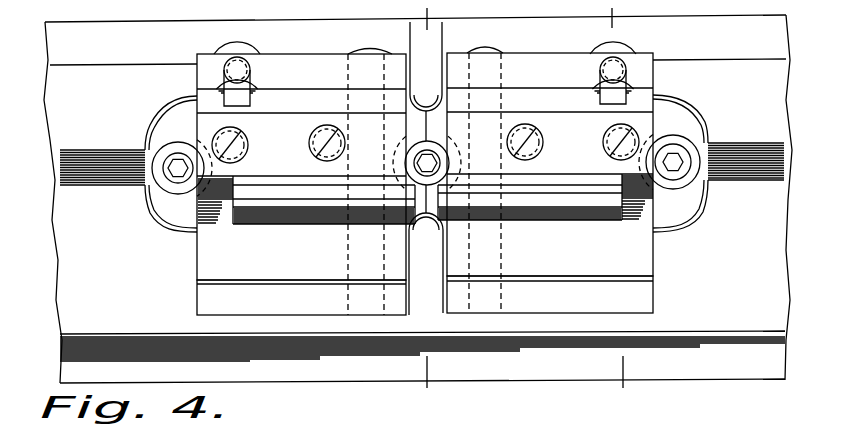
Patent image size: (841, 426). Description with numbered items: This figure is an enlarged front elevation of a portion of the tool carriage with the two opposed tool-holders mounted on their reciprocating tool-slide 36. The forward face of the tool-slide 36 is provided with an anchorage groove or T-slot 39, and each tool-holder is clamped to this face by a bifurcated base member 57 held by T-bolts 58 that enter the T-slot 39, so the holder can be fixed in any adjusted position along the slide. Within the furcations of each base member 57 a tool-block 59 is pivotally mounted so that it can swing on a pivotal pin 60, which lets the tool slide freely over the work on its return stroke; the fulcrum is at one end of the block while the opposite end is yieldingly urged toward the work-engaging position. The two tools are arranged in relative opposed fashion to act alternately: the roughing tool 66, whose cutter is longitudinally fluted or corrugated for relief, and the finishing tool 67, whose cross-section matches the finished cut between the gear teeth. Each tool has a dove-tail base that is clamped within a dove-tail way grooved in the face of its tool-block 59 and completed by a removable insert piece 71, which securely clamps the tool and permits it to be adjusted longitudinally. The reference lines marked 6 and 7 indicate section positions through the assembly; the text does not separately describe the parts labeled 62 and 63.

The section line 6- 6 is at (617, 207).
The section line 7- 7 is at (427, 208).
The tool-slide 36 is at (418, 199).
The T-slot 39 is at (775, 165).
The bifurcated base member 57 is at (210, 298).
The T-bolts 58 is at (168, 158).
The tool-block 59 is at (207, 258).
The pivotal pin 60 is at (367, 50).
The locating pin boss 62 is at (243, 96).
The boss collar 63 is at (257, 98).
The roughing tool 66 is at (565, 185).
The finishing tool 67 is at (281, 185).
The removable insert piece 71 is at (306, 121).